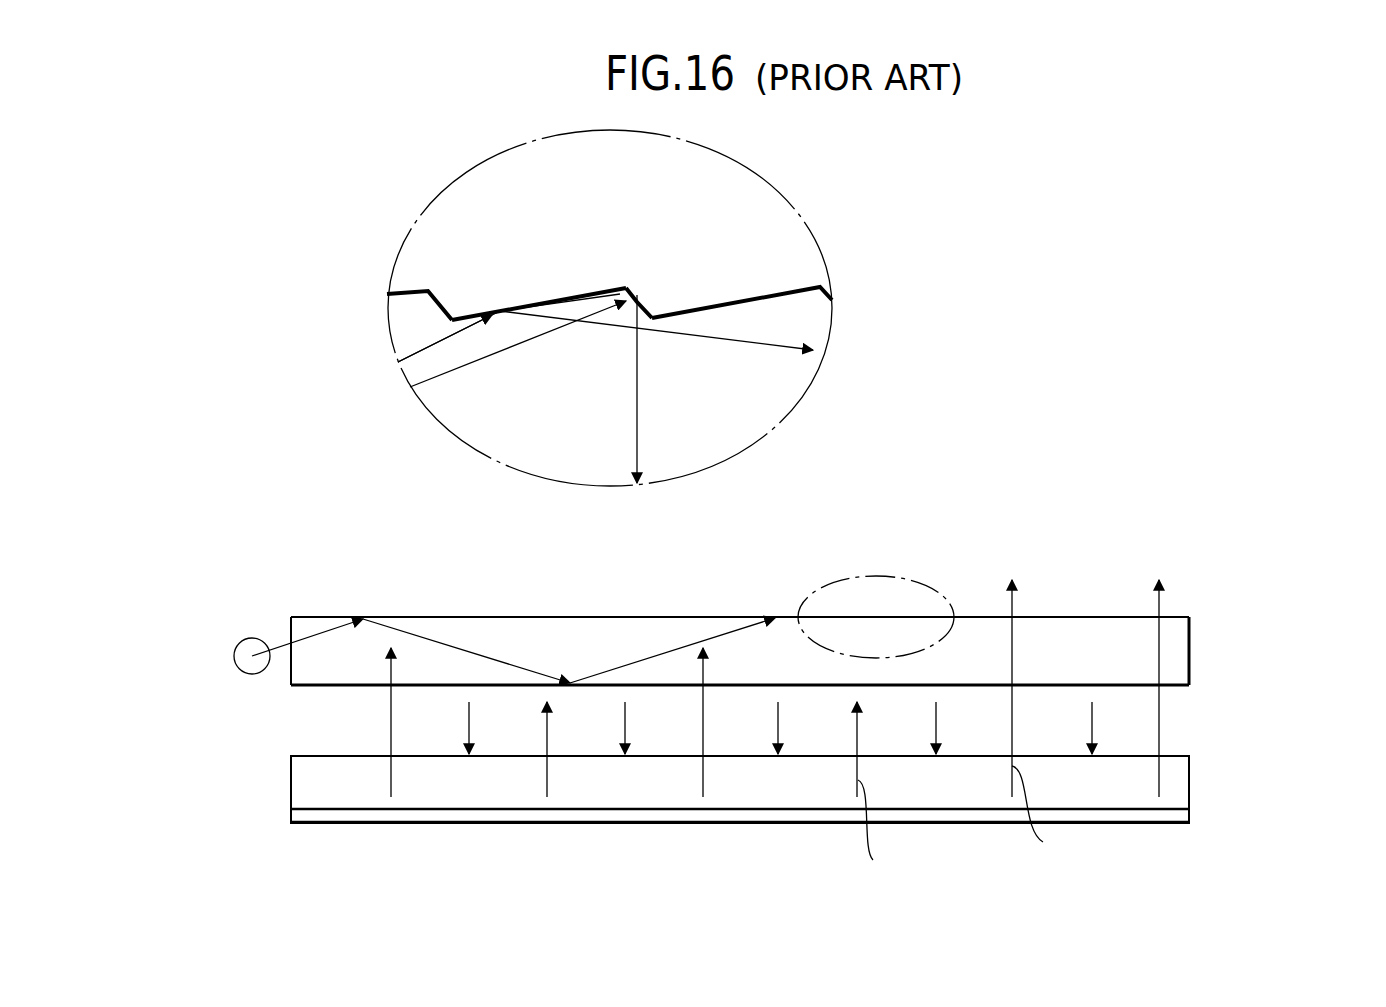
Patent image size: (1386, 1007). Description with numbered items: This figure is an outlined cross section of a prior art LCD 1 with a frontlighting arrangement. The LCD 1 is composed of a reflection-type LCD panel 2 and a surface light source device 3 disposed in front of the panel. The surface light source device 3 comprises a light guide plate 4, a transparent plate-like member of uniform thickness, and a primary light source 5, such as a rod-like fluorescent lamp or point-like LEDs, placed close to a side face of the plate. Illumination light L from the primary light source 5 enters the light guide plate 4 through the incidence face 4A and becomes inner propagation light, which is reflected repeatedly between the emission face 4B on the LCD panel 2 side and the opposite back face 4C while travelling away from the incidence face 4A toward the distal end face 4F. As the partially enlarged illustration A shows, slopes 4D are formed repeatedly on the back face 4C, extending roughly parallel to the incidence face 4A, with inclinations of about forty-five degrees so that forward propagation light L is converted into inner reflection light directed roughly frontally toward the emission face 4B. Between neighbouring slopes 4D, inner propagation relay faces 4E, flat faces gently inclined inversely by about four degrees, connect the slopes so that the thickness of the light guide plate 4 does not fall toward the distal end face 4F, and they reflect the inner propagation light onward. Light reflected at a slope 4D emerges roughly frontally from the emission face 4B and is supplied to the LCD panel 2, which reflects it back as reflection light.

The LCD 1 is at (957, 362).
The reflection-type LCD panel 2 is at (337, 802).
The surface light source device 3 is at (994, 521).
The light guide plate 4 is at (1175, 627).
The incidence face 4A is at (288, 673).
The emission face 4B is at (1177, 683).
The back face 4C is at (1093, 614).
The slopes 4D is at (641, 303).
The inner propagation relay faces 4E is at (547, 302).
The distal end face 4F is at (1194, 657).
The primary light source 5 is at (230, 626).
The illumination light L is at (322, 630).
The partially enlarged illustration A is at (750, 452).